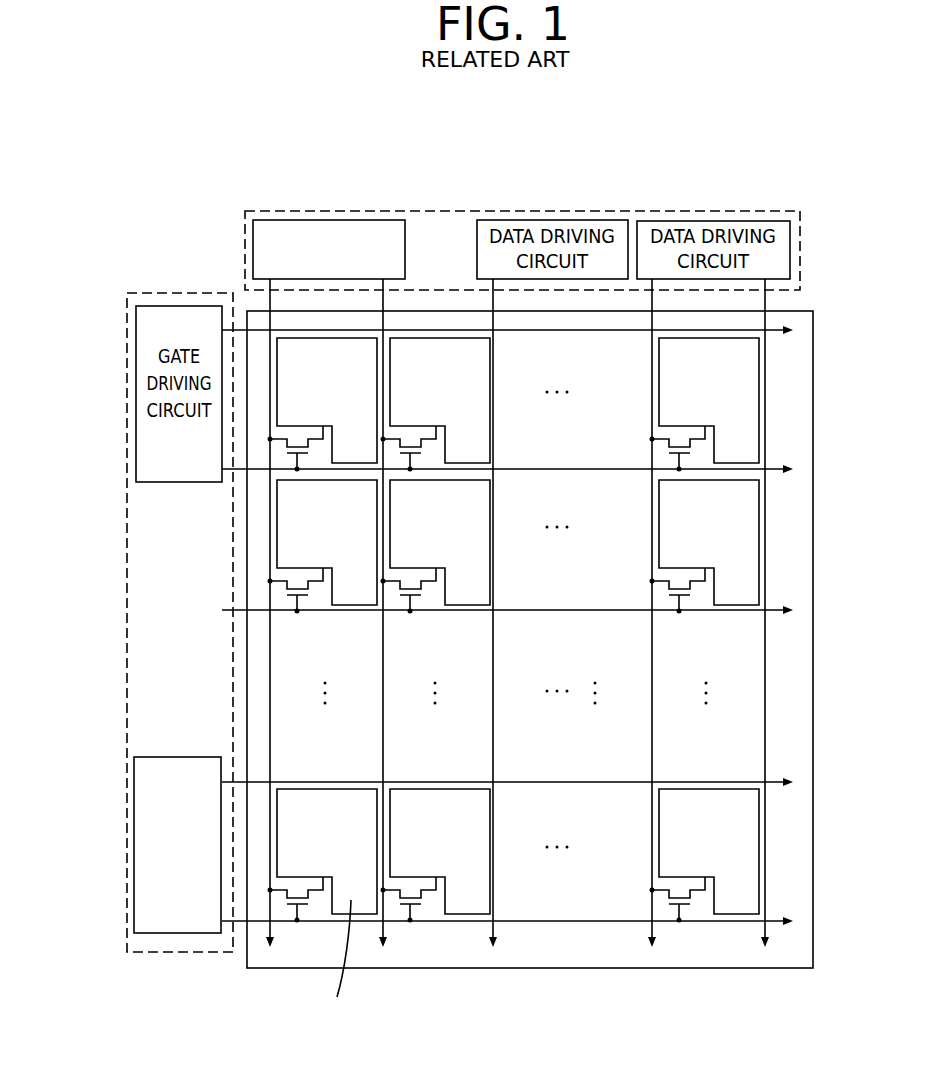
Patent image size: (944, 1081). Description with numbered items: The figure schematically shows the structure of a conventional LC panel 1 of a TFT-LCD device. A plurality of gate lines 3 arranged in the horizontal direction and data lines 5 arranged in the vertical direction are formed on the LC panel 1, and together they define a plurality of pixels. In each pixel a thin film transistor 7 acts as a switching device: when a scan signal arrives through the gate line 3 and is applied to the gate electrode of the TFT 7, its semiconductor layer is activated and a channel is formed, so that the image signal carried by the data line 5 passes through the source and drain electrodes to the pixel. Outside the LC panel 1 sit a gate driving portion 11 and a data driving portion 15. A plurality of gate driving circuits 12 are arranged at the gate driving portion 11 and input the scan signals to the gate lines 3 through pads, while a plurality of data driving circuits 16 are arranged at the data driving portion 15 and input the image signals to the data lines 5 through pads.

The LC panel 1 is at (665, 972).
The gate line 3 is at (579, 923).
The data line 5 is at (493, 894).
The thin film transistor 7 is at (262, 589).
The gate driving portion 11 is at (127, 665).
The gate driving circuit 12 is at (136, 833).
The data driving portion 15 is at (438, 211).
The data driving circuit 16 is at (329, 220).